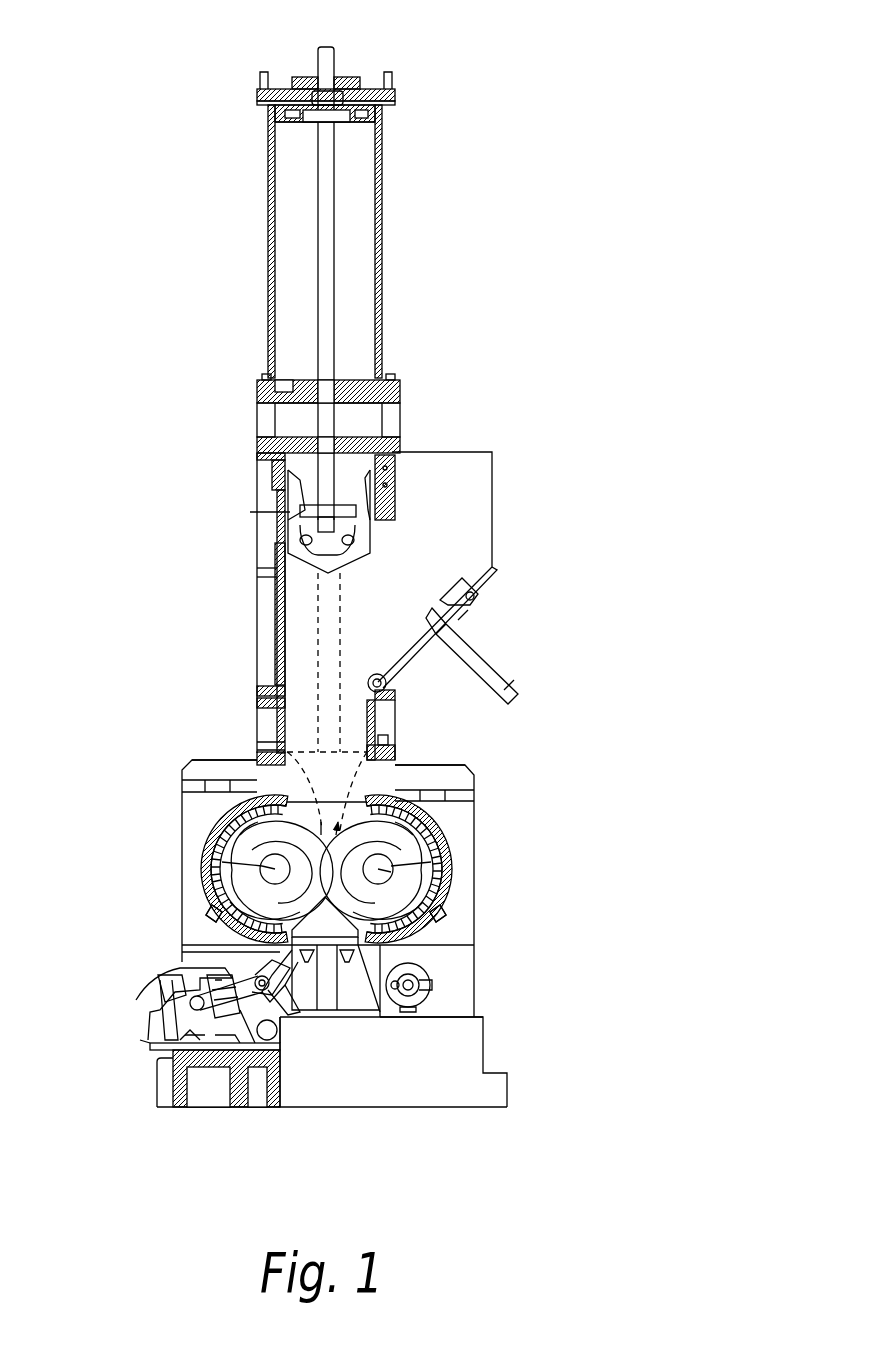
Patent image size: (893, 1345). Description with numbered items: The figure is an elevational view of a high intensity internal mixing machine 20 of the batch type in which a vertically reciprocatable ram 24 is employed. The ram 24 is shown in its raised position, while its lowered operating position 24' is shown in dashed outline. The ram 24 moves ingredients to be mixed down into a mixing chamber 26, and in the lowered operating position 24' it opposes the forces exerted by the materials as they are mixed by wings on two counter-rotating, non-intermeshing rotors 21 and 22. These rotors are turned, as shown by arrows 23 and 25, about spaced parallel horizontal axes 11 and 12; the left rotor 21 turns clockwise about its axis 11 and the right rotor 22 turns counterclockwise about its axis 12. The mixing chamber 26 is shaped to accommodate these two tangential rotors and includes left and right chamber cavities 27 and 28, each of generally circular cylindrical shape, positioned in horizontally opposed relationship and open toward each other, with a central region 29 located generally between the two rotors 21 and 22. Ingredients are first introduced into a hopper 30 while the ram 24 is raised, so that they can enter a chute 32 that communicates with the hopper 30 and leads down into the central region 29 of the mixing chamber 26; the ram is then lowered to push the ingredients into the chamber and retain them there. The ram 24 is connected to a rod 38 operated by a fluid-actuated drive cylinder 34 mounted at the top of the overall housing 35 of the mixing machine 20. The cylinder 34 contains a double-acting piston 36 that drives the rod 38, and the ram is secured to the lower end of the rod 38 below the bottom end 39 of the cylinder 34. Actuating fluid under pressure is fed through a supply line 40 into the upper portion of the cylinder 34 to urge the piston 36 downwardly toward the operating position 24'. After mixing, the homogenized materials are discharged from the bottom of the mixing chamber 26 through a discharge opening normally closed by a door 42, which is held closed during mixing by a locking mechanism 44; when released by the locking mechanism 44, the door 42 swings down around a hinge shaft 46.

The internal mixing machine 20 is at (146, 263).
The axis 11 is at (222, 866).
The axis 12 is at (431, 866).
The left rotor 21 is at (220, 850).
The right rotor 22 is at (437, 847).
The arrow 23 is at (262, 770).
The arrow 25 is at (396, 790).
The ram 24 is at (415, 496).
The lowered operating position 24' is at (439, 730).
The mixing chamber 26 is at (222, 897).
The left chamber cavity 27 is at (214, 918).
The right chamber cavity 28 is at (440, 912).
The central region 29 is at (270, 742).
The hopper 30 is at (462, 536).
The chute 32 is at (298, 694).
The fluid-actuated drive cylinder 34 is at (383, 222).
The housing 35 is at (232, 752).
The double-acting piston 36 is at (358, 128).
The rod 38 is at (345, 283).
The bottom end 39 is at (355, 408).
The supply line 40 is at (310, 54).
The door 42 is at (330, 958).
The locking mechanism 44 is at (244, 973).
The hinge shaft 46 is at (433, 988).